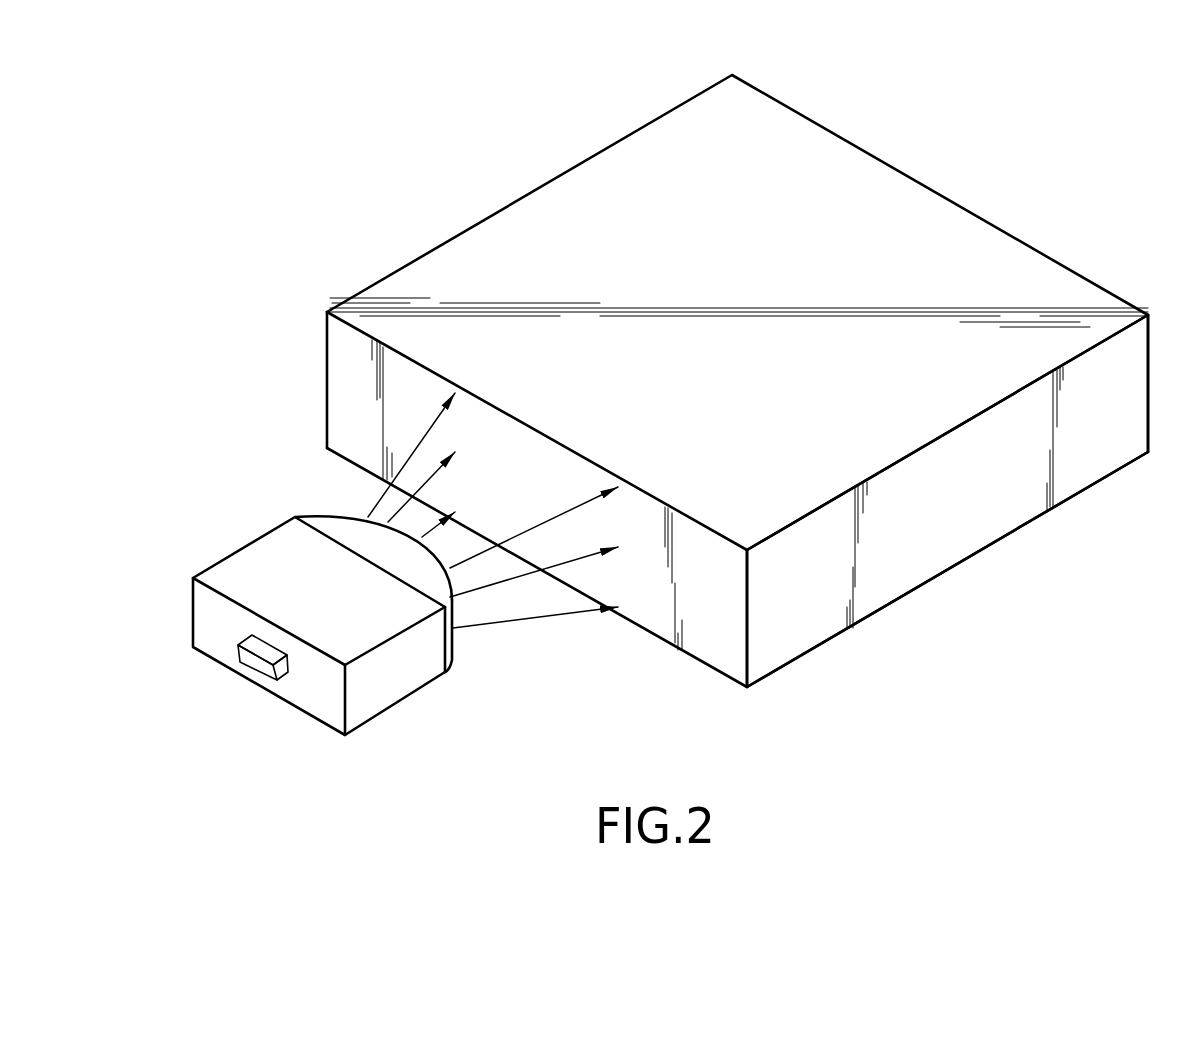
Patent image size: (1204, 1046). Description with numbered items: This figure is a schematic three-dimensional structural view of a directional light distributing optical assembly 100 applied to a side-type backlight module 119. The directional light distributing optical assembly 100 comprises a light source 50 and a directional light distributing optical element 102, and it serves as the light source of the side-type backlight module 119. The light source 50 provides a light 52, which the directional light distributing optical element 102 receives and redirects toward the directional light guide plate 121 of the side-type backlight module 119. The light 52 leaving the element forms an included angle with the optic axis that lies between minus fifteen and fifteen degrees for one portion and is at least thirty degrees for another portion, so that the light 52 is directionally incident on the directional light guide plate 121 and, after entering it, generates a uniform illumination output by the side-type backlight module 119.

The side-type backlight module 119 is at (719, 381).
The directional light guide plate 121 is at (917, 522).
The light 52 is at (527, 620).
The directional light distributing optical assembly 100 is at (322, 676).
The directional light distributing optical element 102 is at (413, 707).
The light source 50 is at (271, 714).